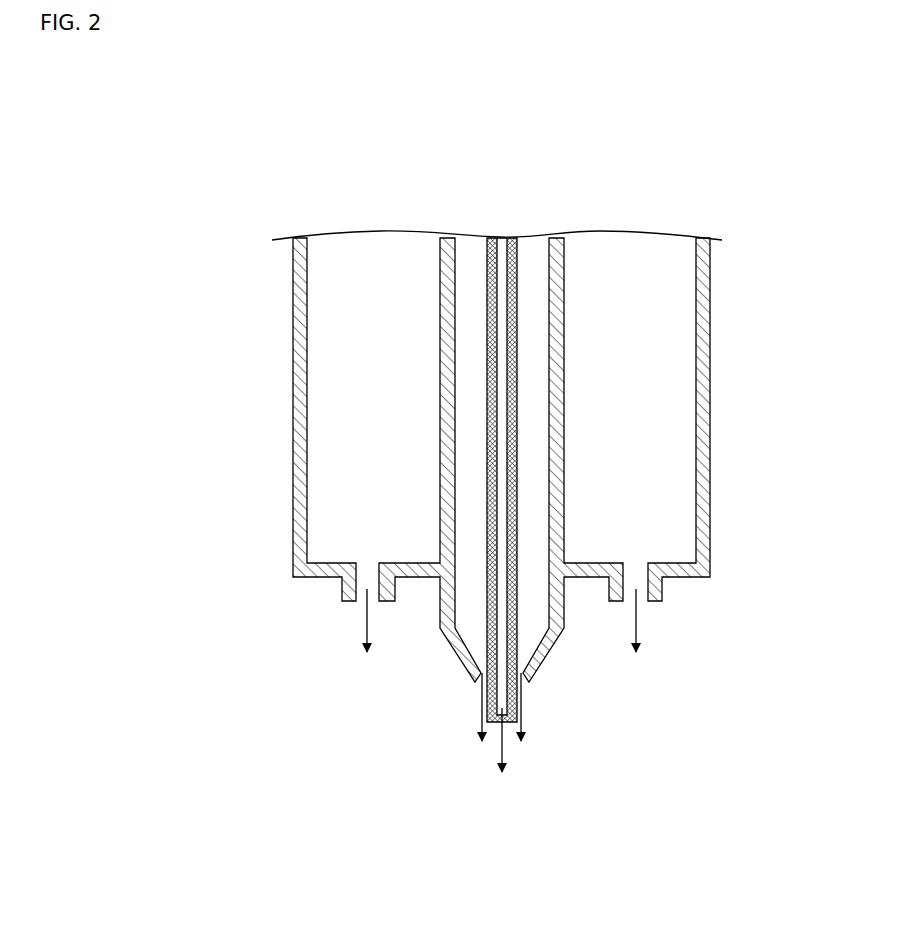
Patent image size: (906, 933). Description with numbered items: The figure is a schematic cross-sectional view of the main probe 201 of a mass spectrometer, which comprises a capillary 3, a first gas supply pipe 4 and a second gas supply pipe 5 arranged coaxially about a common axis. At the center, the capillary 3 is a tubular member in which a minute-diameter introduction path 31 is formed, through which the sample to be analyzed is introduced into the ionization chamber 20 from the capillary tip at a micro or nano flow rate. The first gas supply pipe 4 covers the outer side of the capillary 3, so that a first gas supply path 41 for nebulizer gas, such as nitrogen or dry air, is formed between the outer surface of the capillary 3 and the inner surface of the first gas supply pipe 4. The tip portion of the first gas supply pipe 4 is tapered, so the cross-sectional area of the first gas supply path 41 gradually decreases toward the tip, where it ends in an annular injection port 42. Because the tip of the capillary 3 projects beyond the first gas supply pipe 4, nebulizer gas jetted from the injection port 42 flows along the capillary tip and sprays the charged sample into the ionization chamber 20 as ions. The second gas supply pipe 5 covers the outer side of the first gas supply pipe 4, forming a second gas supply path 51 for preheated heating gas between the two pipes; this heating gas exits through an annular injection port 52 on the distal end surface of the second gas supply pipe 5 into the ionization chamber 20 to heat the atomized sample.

The ionization chamber 20 is at (519, 877).
The main probe 201 is at (685, 712).
The capillary 3 is at (513, 453).
The introduction path 31 is at (495, 240).
The first gas supply pipe 4 is at (563, 345).
The first gas supply path 41 is at (533, 248).
The injection port 42 is at (522, 685).
The second gas supply pipe 5 is at (705, 418).
The second gas supply path 51 is at (383, 245).
The injection port 52 is at (358, 602).